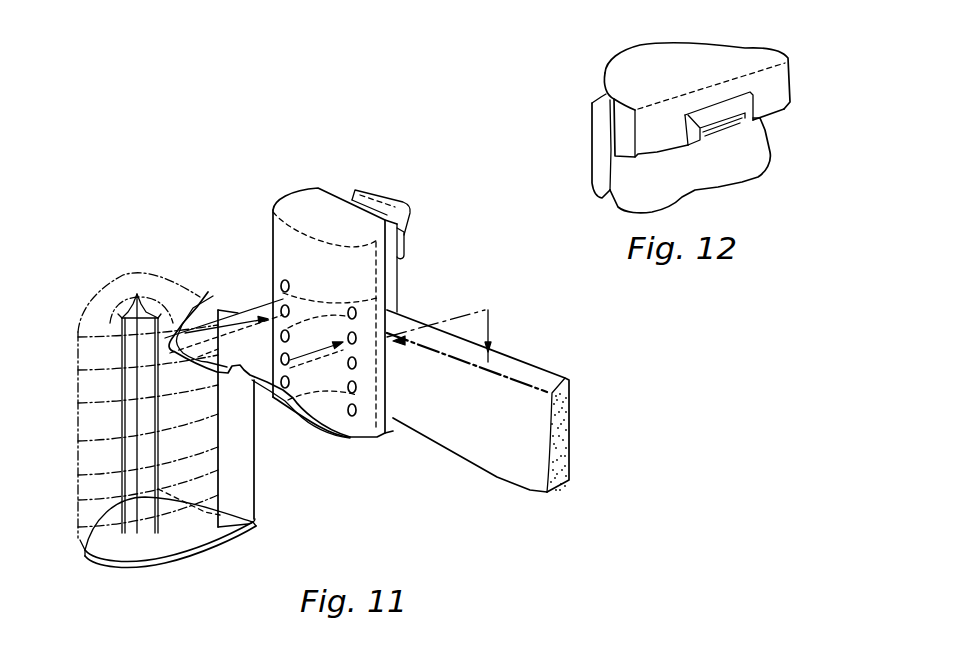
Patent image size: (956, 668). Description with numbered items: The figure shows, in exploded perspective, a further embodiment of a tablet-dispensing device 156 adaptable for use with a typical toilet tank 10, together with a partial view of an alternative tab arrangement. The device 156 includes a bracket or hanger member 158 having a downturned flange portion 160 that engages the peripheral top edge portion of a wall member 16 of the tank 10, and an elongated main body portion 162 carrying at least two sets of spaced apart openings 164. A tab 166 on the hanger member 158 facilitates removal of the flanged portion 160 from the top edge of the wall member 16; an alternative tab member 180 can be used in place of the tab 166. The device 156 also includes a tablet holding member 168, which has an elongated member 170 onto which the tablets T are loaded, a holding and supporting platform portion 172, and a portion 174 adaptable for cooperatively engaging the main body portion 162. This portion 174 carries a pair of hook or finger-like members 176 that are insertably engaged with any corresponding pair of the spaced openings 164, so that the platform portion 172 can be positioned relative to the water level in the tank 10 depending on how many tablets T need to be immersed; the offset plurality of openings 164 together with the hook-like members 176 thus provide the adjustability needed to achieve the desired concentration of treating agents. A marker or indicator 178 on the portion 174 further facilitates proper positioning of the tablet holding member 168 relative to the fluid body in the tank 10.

In FIG. 11, the toilet tank 10 is at (586, 484).
In FIG. 11, the wall member 16 is at (569, 420).
In FIG. 12, the wall member 16 is at (735, 158).
In FIG. 11, the device embodiment 156 is at (130, 212).
In FIG. 11, the bracket or hanger member 158 is at (303, 182).
In FIG. 11, the downturned flange portion 160 is at (404, 248).
In FIG. 12, the downturned flange portion 160 is at (792, 73).
In FIG. 11, the elongated main body portion 162 is at (285, 250).
In FIG. 11, the spaced apart openings 164 is at (281, 284).
In FIG. 11, the tab 166 is at (414, 209).
In FIG. 11, the tablet holding member 168 is at (166, 566).
In FIG. 11, the elongated member 170 is at (122, 420).
In FIG. 11, the holding and supporting platform portion 172 is at (193, 553).
In FIG. 11, the engaging portion 174 is at (258, 501).
In FIG. 11, the hook or finger-like members 176 is at (207, 288).
In FIG. 11, the marker or indicator 178 is at (255, 478).
In FIG. 12, the alternative tab member 180 is at (755, 118).
In FIG. 11, the tablets T is at (78, 350).